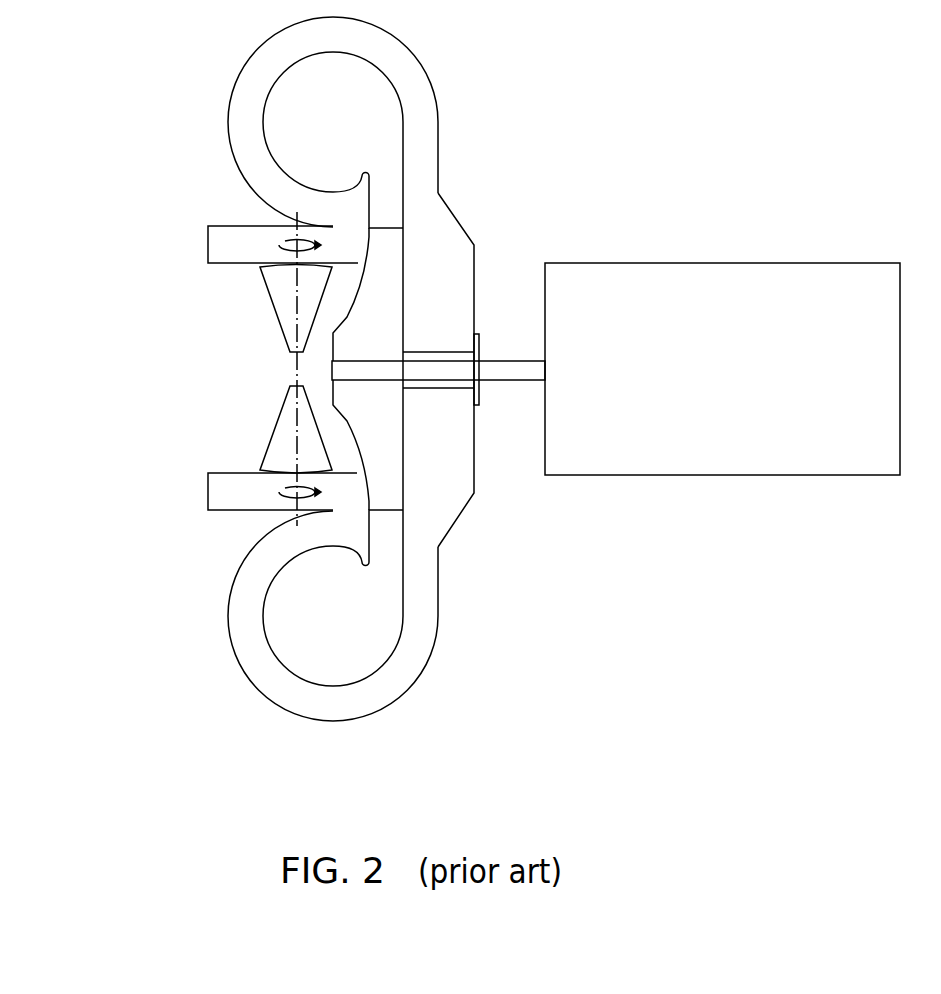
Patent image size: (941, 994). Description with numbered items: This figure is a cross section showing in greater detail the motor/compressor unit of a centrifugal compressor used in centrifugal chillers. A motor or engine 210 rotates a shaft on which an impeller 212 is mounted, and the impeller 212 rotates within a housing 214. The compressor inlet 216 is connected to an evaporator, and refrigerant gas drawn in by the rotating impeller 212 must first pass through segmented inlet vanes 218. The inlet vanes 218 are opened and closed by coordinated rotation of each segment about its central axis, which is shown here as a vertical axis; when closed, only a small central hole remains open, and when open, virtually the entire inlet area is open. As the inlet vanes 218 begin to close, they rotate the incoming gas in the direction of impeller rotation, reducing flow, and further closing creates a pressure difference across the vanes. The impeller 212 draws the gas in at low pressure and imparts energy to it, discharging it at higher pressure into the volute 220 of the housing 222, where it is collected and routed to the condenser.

The motor 210 is at (650, 485).
The impeller 212 is at (385, 277).
The housing 214 is at (222, 492).
The compressor inlet 216 is at (282, 368).
The inlet vanes 218 is at (283, 302).
The volute 220 is at (333, 122).
The housing 222 is at (447, 615).